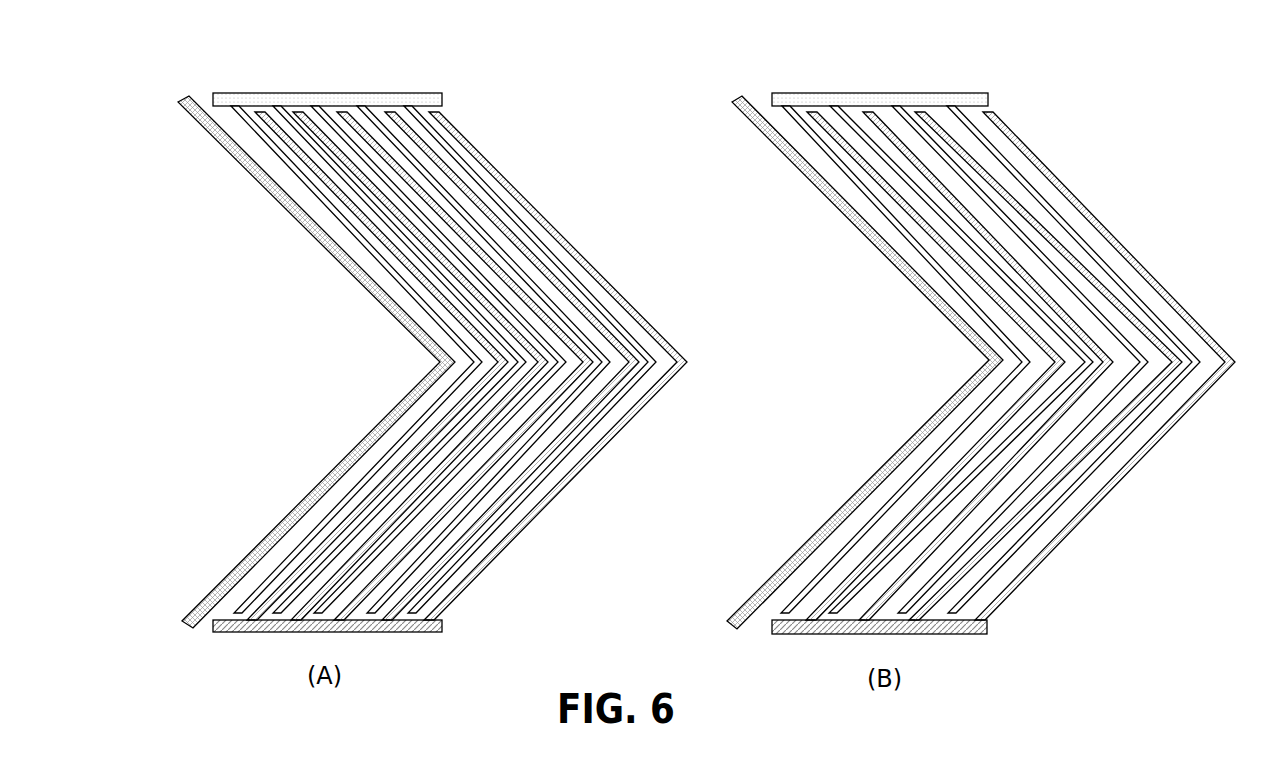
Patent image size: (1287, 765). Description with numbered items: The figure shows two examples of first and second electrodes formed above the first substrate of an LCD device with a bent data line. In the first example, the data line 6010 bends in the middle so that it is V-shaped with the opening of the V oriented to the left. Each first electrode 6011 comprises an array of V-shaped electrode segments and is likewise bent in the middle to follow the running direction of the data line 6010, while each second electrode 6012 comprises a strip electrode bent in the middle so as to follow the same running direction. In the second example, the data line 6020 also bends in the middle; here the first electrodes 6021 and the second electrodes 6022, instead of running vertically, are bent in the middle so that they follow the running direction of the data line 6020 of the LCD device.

The data line 6010 is at (323, 245).
The first electrode 6011 is at (282, 112).
The second electrode 6012 is at (445, 122).
The data line 6020 is at (873, 250).
The first electrode 6021 is at (838, 112).
The second electrode 6022 is at (1003, 127).